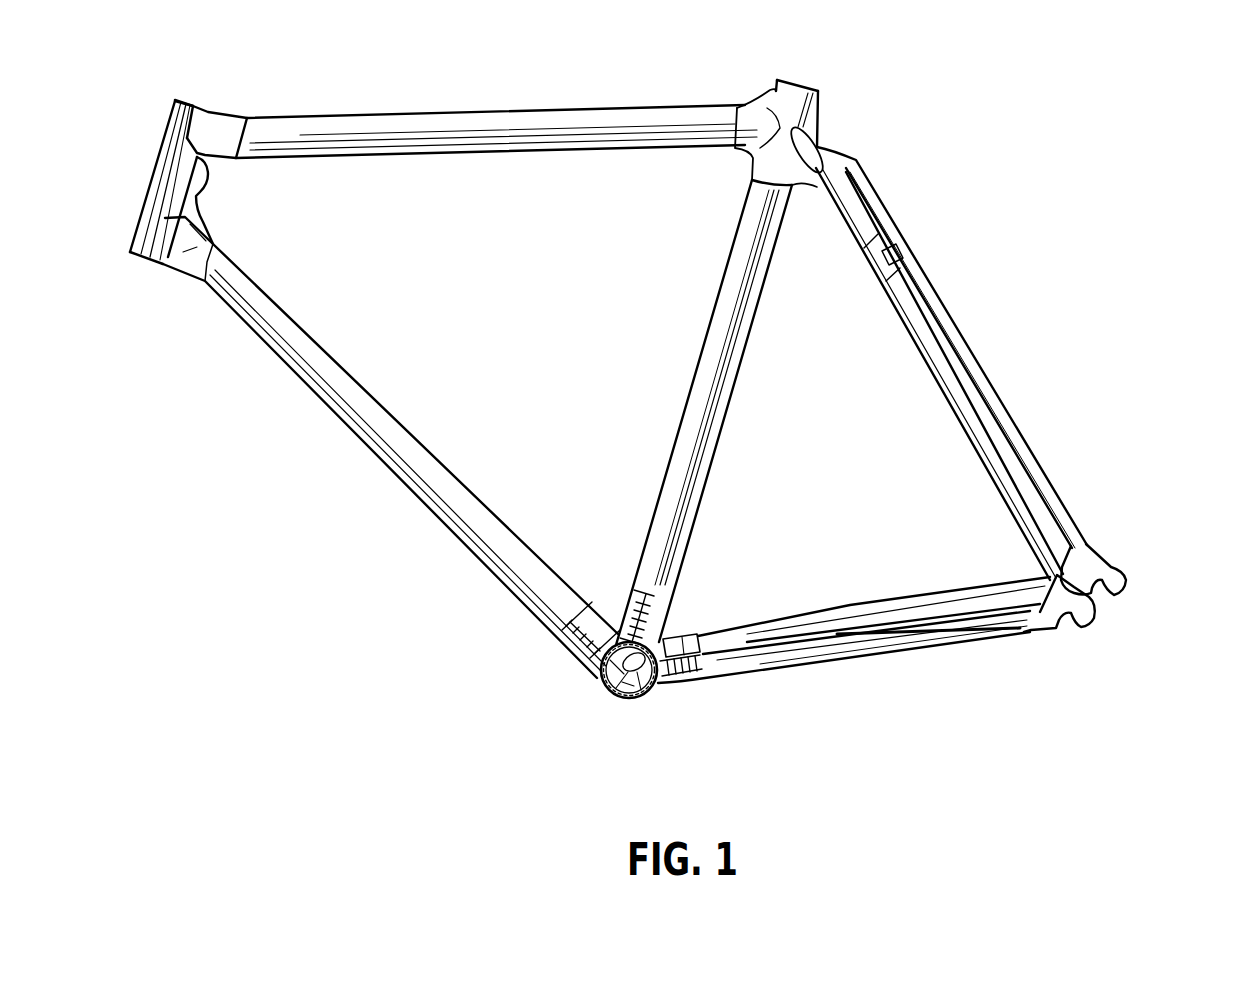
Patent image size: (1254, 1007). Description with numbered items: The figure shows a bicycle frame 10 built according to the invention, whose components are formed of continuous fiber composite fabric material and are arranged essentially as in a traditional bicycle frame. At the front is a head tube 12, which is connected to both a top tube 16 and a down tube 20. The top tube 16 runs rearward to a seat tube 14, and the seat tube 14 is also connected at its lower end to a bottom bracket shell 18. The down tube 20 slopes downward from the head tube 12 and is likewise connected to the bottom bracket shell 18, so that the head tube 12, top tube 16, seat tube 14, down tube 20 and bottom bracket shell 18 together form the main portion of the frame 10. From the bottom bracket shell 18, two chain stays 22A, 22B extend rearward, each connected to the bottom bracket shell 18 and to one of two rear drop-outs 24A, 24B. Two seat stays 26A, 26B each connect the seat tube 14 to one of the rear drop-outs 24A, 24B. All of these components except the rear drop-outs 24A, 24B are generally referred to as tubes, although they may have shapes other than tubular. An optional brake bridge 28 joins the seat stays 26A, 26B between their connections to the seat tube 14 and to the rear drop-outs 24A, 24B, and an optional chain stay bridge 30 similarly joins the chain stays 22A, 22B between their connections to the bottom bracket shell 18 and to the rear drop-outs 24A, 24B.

The bicycle frame 10 is at (262, 428).
The head tube 12 is at (167, 167).
The seat tube 14 is at (727, 290).
The top tube 16 is at (331, 116).
The bottom bracket shell 18 is at (600, 686).
The down tube 20 is at (376, 410).
The chain stay 22A is at (968, 642).
The chain stay 22B is at (964, 587).
The rear drop-out 24A is at (1084, 620).
The rear drop-out 24B is at (1111, 570).
The seat stay 26A is at (945, 390).
The seat stay 26B is at (957, 347).
The brake bridge 28 is at (892, 238).
The chain stay bridge 30 is at (684, 628).